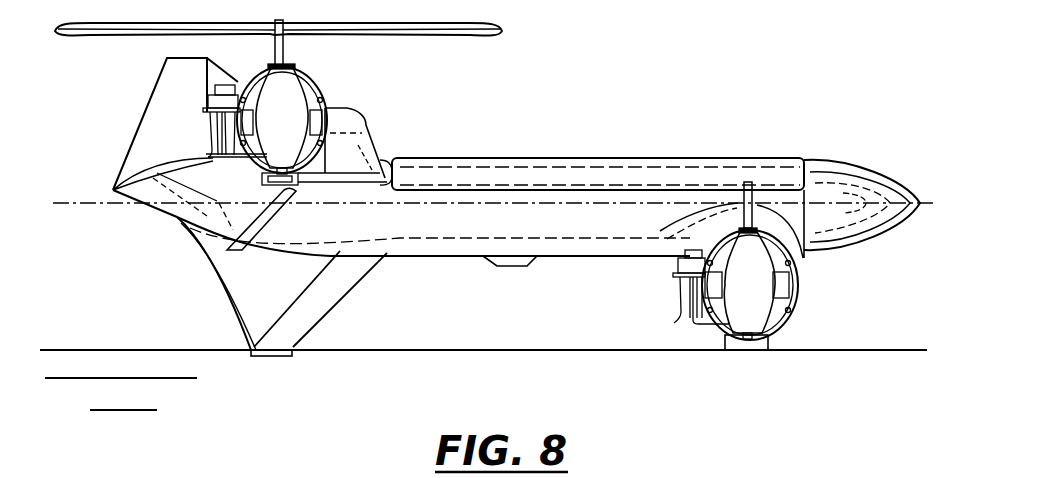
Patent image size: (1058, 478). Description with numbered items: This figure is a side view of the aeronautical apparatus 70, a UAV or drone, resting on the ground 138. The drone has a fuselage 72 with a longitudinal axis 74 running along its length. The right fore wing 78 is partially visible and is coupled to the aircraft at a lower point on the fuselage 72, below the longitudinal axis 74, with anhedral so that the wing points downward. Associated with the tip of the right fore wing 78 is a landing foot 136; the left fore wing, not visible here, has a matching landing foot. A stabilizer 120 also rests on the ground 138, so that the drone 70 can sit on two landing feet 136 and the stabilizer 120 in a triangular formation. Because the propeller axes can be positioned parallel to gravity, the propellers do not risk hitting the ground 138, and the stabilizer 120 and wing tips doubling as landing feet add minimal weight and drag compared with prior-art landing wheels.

The aeronautical apparatus 70 is at (494, 214).
The fuselage 72 is at (453, 228).
The longitudinal axis 74 is at (103, 203).
The right fore wing 78 is at (788, 227).
The stabilizer 120 is at (263, 288).
The landing foot 136 is at (745, 350).
The ground 138 is at (206, 350).